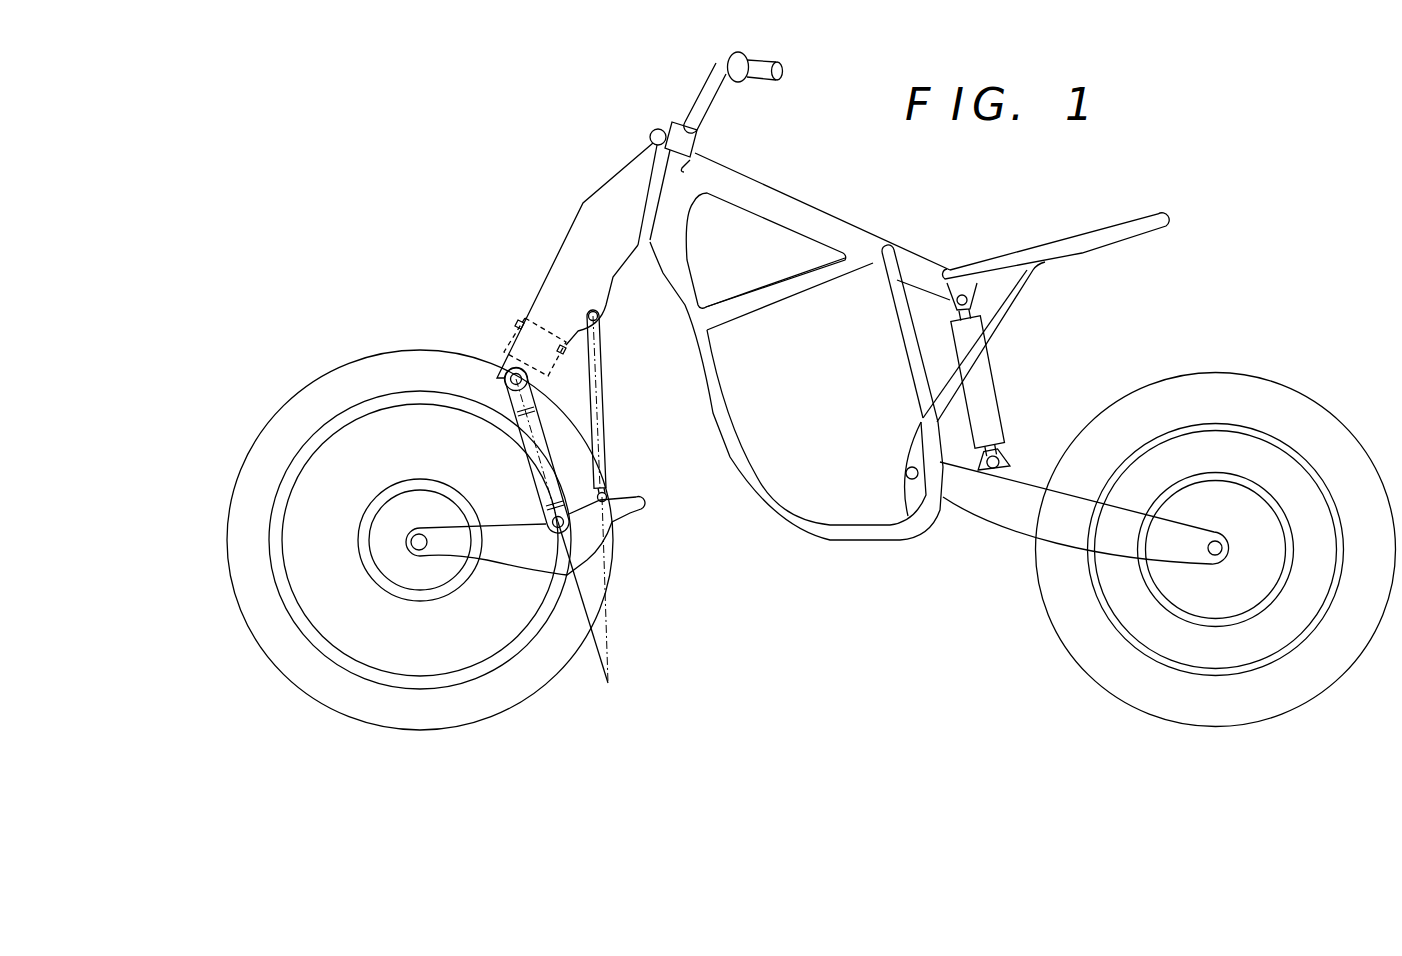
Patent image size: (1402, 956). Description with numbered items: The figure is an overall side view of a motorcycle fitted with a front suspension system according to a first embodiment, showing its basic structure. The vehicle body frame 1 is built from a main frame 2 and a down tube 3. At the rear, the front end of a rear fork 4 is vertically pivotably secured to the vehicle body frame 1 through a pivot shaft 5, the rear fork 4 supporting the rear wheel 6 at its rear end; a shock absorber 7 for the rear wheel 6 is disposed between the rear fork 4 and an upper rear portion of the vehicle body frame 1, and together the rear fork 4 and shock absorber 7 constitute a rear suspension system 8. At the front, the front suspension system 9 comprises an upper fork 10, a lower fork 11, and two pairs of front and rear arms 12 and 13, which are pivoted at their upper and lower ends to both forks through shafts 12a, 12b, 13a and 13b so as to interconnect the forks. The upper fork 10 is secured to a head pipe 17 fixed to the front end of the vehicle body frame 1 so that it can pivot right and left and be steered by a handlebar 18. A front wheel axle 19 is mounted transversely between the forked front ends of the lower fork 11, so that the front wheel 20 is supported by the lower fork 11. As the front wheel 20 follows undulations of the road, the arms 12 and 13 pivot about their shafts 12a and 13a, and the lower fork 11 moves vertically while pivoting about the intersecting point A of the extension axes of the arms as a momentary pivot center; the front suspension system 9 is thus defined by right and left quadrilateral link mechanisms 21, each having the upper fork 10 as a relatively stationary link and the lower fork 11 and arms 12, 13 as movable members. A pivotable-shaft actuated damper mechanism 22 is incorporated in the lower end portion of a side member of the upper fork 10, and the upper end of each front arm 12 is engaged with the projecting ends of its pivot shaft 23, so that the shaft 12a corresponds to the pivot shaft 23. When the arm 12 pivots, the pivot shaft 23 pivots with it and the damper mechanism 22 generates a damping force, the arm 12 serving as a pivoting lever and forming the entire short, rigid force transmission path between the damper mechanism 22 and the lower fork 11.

The vehicle body frame 1 is at (782, 520).
The main frame 2 is at (793, 208).
The down tube 3 is at (720, 414).
The rear fork 4 is at (1062, 530).
The pivot shaft 5 is at (911, 481).
The rear wheel 6 is at (1223, 710).
The shock absorber 7 is at (987, 380).
The rear suspension system 8 is at (1046, 414).
The front suspension system 9 is at (543, 257).
The upper fork 10 is at (600, 204).
The lower fork 11 is at (508, 553).
The front arm 12 is at (543, 470).
The shaft 12a is at (502, 385).
The shaft 12b is at (557, 531).
The rear arm 13 is at (603, 408).
The shaft 13a is at (600, 313).
The shaft 13b is at (615, 493).
The head pipe 17 is at (657, 167).
The handlebar 18 is at (713, 73).
The front wheel axle 19 is at (406, 550).
The front wheel 20 is at (273, 651).
The quadrilateral link mechanism 21 is at (513, 445).
The damper mechanism 22 is at (518, 332).
The pivot shaft 23 is at (516, 379).
The intersecting point A is at (588, 606).